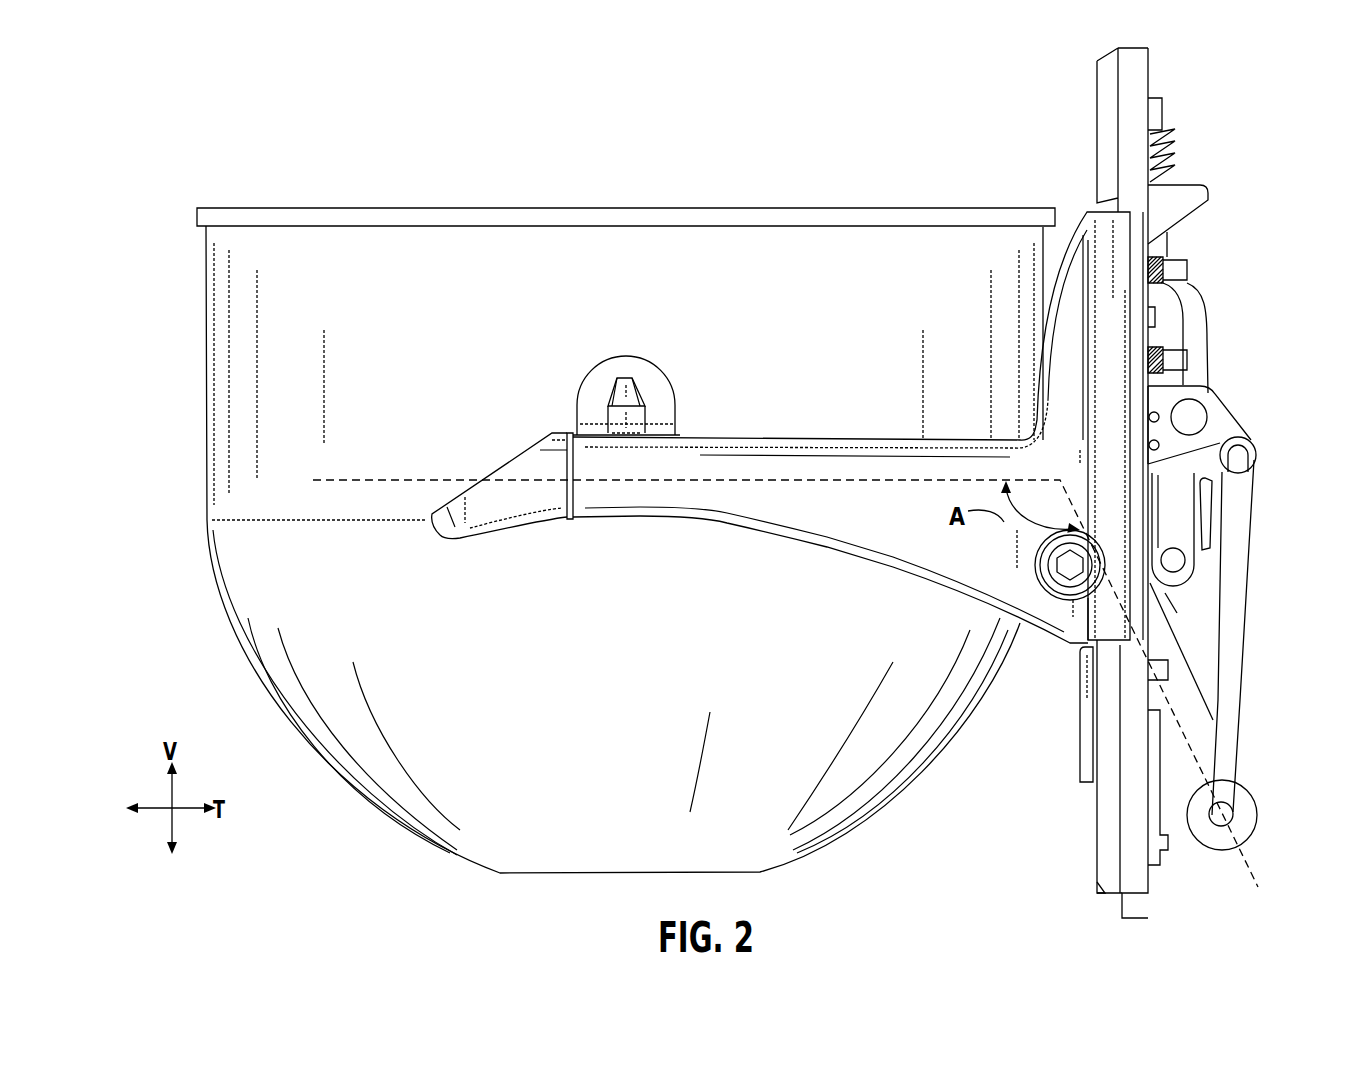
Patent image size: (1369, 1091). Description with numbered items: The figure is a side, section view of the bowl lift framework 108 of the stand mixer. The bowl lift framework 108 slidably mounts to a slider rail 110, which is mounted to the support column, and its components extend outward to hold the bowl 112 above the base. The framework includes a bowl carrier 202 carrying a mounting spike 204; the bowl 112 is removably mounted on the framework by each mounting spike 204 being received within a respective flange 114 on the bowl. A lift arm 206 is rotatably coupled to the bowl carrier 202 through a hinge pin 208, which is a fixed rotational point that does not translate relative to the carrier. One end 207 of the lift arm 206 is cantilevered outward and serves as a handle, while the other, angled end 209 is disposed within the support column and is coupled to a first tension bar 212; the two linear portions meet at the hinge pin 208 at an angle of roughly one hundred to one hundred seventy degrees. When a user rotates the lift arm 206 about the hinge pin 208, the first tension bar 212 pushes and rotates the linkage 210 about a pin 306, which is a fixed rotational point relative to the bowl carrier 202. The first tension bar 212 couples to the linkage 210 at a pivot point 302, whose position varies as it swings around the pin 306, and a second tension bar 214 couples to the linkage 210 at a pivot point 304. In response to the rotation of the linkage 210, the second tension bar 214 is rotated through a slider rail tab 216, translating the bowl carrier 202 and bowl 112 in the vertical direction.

The bowl lift framework 108 is at (881, 71).
The slider rail 110 is at (1118, 99).
The bowl 112 is at (336, 262).
The flange 114 is at (595, 380).
The bowl carrier 202 is at (795, 475).
The mounting spike 204 is at (632, 400).
The lift arm 206 is at (500, 492).
The cantilevered end 207 is at (516, 562).
The hinge pin 208 is at (1071, 570).
The angled end 209 is at (1181, 743).
The linkage 210 is at (1225, 432).
The first tension bar 212 is at (1240, 612).
The second tension bar 214 is at (1197, 323).
The slider rail tab 216 is at (1185, 187).
The pivot point 302 is at (1252, 448).
The pivot point 304 is at (1188, 560).
The pin 306 is at (1192, 410).